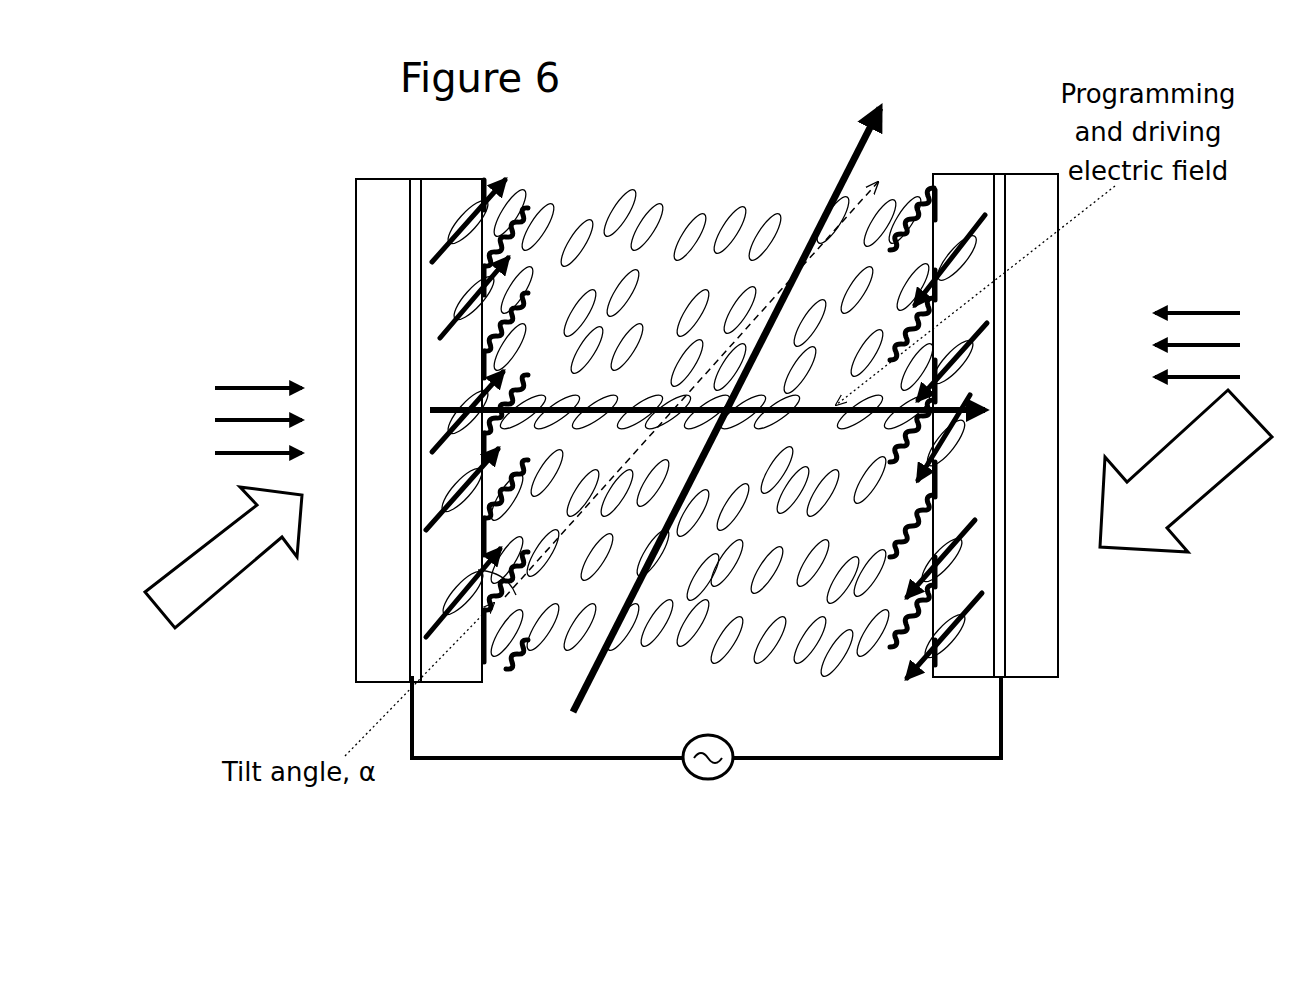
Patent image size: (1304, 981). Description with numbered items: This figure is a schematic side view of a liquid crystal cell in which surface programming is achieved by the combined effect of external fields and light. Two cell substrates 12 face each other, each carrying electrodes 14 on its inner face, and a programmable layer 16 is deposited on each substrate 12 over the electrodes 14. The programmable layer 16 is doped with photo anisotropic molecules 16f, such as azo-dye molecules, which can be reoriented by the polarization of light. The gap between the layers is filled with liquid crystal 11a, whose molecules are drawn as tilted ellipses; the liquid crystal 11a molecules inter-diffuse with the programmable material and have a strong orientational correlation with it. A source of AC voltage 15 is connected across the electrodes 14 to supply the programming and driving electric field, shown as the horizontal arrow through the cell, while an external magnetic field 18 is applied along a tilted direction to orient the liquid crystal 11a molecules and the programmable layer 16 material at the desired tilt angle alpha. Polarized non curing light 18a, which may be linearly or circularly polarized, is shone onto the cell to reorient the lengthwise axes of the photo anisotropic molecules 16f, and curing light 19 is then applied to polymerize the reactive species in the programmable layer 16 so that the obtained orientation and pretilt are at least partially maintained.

The cell substrate 12 is at (355, 237).
The electrodes 14 is at (414, 178).
The programmable layer 16 is at (930, 174).
The photo anisotropic molecules 16f is at (975, 262).
The magnetic field 18 is at (791, 372).
The polarized non curing light 18a is at (708, 547).
The curing light 19 is at (729, 341).
The liquid crystal 11a is at (766, 648).
The source of AC voltage 15 is at (706, 745).